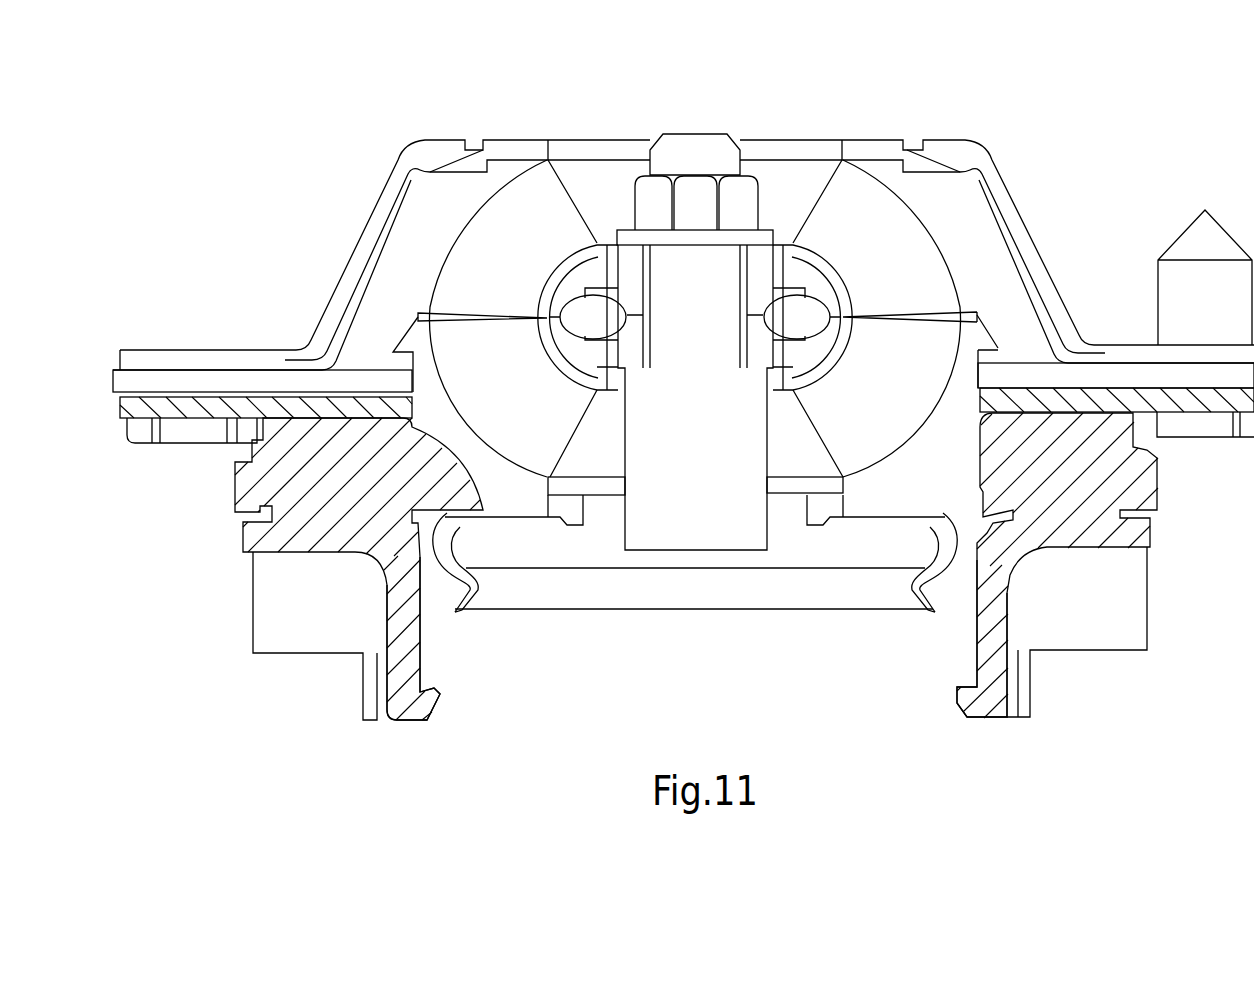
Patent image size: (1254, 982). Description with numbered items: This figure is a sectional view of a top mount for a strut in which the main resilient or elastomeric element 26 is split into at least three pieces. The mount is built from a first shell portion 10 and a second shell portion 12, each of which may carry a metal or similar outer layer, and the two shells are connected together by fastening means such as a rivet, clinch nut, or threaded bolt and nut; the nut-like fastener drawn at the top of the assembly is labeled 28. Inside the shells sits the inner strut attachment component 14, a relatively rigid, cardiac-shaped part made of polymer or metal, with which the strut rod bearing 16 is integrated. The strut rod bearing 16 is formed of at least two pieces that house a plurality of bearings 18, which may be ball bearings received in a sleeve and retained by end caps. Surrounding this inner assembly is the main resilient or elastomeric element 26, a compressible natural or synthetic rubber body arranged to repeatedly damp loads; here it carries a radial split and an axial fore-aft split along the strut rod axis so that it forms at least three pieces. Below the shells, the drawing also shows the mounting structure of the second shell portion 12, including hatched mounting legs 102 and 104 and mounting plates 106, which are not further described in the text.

The first shell portion 10 is at (421, 130).
The second shell portion 12 is at (197, 475).
The inner strut attachment component 14 is at (847, 314).
The strut rod bearing 16 is at (596, 262).
The bearings 18 is at (568, 305).
The main resilient or elastomeric element 26 is at (862, 162).
The fastener nut 28 is at (705, 148).
The left mounting leg 102 is at (387, 580).
The right mounting leg 104 is at (890, 473).
The mounting plate 106 is at (143, 406).